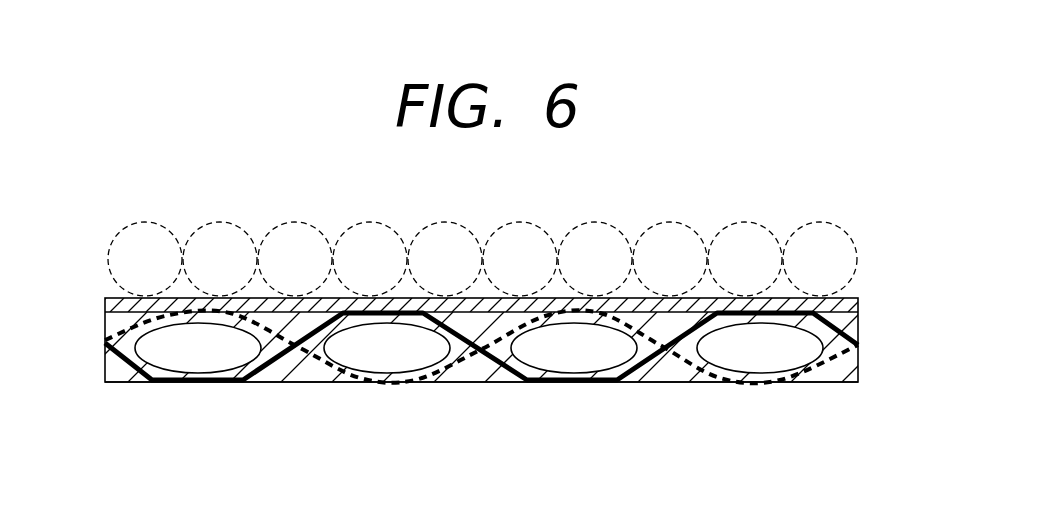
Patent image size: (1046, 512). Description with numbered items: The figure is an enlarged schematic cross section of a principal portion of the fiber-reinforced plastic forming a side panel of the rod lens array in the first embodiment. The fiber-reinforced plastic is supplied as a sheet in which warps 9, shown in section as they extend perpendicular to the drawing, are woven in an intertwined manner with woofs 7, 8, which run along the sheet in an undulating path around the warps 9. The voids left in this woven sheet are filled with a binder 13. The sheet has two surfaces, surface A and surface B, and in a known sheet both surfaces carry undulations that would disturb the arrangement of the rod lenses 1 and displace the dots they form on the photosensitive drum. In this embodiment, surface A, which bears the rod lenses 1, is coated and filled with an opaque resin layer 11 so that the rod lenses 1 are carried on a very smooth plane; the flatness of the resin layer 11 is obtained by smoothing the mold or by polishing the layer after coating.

The rod lenses 1 is at (135, 223).
The woof 7 is at (607, 382).
The woof 8 is at (730, 382).
The warps 9 is at (795, 362).
The opaque resin layer 11 is at (105, 305).
The binder 13 is at (853, 328).
The surface A is at (853, 298).
The surface B is at (846, 382).